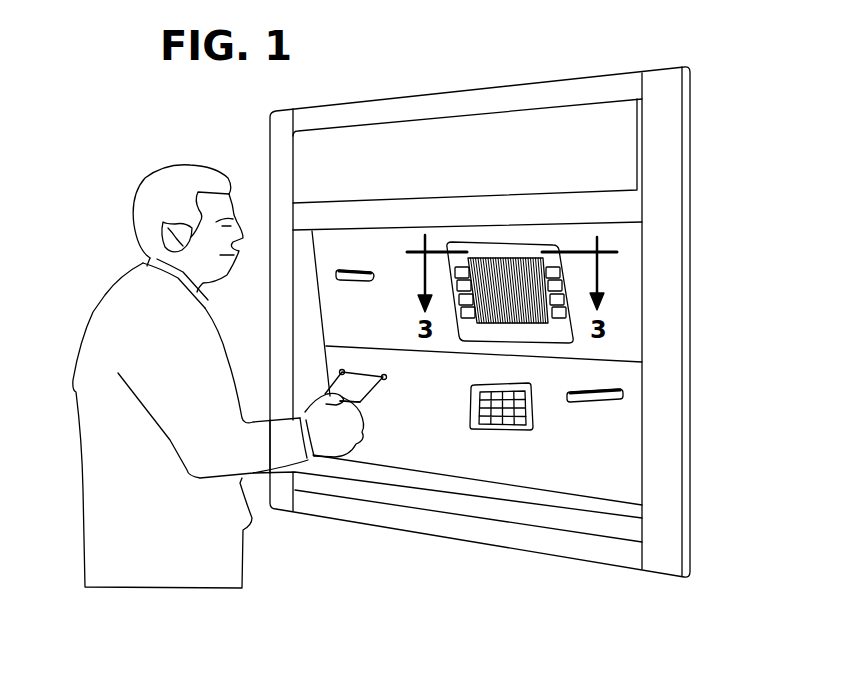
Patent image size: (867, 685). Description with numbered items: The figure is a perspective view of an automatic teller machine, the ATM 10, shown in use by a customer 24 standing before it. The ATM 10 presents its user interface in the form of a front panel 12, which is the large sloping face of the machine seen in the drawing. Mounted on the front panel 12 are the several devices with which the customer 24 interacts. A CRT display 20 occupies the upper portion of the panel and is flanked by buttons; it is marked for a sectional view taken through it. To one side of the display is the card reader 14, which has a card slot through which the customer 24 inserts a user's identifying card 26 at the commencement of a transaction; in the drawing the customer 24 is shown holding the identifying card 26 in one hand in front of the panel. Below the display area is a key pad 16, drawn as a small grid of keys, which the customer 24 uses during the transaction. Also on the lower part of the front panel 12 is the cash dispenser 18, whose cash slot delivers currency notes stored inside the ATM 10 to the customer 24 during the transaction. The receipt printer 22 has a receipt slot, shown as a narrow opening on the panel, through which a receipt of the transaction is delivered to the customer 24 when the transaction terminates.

The automatic teller machine 10 is at (626, 50).
The front panel 12 is at (608, 307).
The card reader 14 is at (387, 378).
The key pad 16 is at (490, 432).
The cash dispenser 18 is at (623, 398).
The CRT display 20 is at (498, 260).
The receipt printer 22 is at (345, 283).
The customer 24 is at (108, 284).
The user's identifying card 26 is at (365, 401).